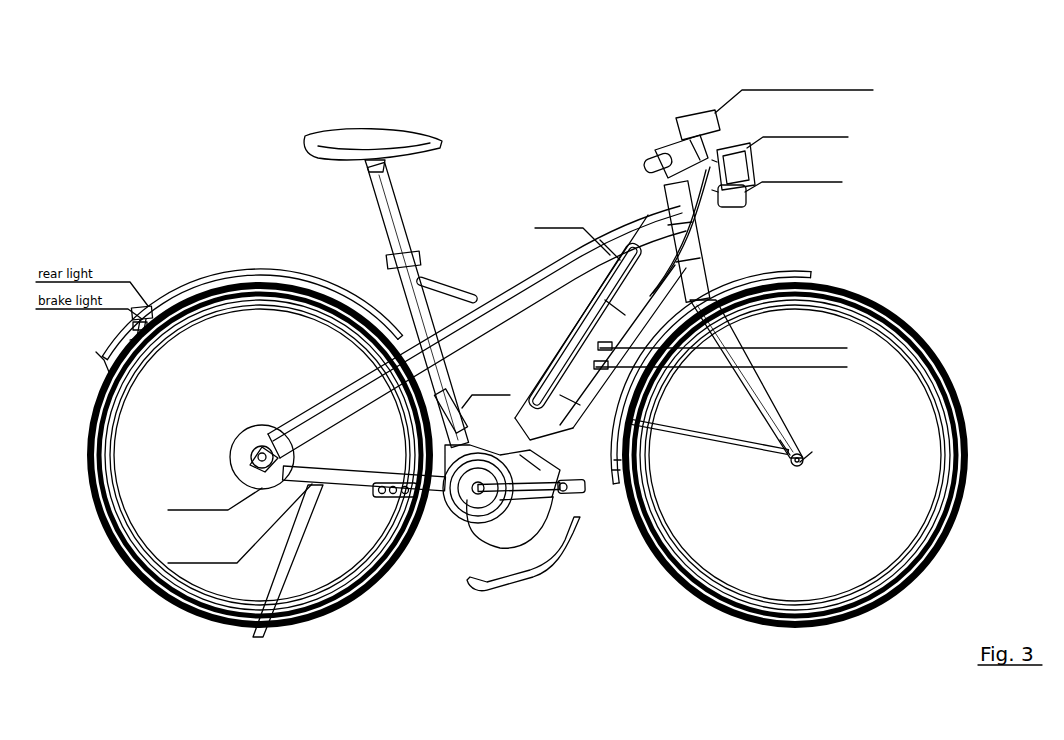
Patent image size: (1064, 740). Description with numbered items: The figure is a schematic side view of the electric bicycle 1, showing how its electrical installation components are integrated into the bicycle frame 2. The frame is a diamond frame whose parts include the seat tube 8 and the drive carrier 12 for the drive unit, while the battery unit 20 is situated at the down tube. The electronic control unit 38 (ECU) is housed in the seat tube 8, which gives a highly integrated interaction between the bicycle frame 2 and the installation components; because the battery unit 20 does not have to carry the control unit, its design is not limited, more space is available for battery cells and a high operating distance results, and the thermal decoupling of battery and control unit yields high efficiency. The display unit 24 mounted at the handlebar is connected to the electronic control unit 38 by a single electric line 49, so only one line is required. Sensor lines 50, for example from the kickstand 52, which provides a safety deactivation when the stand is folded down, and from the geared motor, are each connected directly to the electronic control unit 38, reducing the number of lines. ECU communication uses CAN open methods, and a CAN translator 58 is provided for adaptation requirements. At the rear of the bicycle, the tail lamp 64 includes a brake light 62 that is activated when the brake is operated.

The electric bicycle 1 is at (242, 133).
The bicycle frame 2 is at (567, 168).
The seat tube 8 is at (447, 365).
The drive carrier 12 is at (447, 507).
The battery unit 20 is at (519, 268).
The display unit 24 is at (694, 105).
The electronic control unit 38 is at (460, 388).
The electric line 49 is at (610, 213).
The sensor line 50 is at (380, 490).
The kickstand 52 is at (287, 628).
The CAN translator 58 is at (652, 290).
The brake light 62 is at (130, 320).
The tail lamp 64 is at (150, 302).